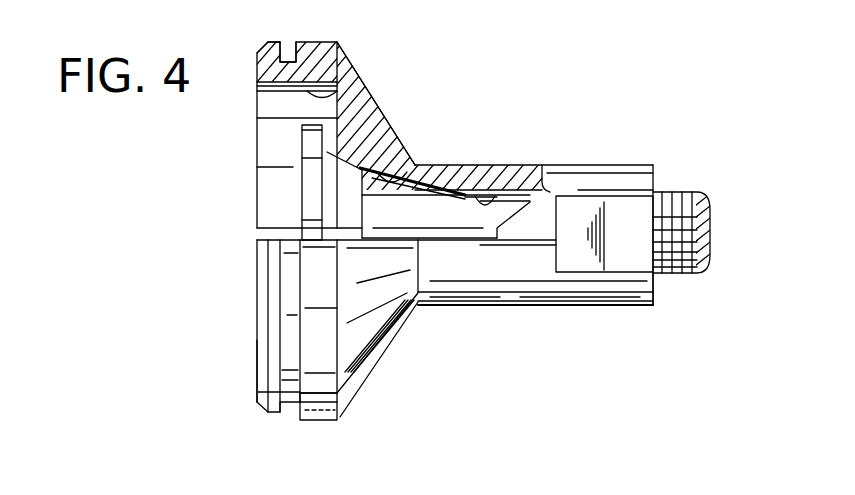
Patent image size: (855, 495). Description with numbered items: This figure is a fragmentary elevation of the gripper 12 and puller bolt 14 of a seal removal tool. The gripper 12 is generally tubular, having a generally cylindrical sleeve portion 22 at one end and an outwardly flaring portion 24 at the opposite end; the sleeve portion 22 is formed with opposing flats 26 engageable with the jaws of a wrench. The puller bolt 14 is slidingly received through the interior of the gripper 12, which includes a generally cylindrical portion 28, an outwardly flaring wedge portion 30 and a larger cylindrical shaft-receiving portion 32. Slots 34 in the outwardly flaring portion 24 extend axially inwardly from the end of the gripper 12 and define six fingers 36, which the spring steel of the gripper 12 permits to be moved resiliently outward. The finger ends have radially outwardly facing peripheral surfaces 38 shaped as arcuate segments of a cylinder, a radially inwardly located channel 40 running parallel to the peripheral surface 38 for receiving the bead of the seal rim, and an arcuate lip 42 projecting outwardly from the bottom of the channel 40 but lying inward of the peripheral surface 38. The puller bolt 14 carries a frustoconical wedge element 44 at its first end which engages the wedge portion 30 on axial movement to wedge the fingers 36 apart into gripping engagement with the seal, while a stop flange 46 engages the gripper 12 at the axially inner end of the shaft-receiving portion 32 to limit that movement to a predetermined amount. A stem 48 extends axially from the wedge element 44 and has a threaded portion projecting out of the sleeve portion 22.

The gripper 12 is at (417, 340).
The puller bolt 14 is at (685, 275).
The sleeve portion 22 is at (607, 163).
The outwardly flaring portion 24 is at (413, 107).
The flats 26 is at (623, 207).
The cylindrical portion 28 is at (472, 190).
The wedge portion 30 is at (397, 170).
The shaft-receiving portion 32 is at (364, 63).
The slots 34 is at (478, 296).
The fingers 36 is at (257, 80).
The peripheral surfaces 38 is at (313, 42).
The channel 40 is at (287, 62).
The lip 42 is at (272, 50).
The wedge element 44 is at (318, 186).
The stop flange 46 is at (306, 147).
The stem 48 is at (672, 192).